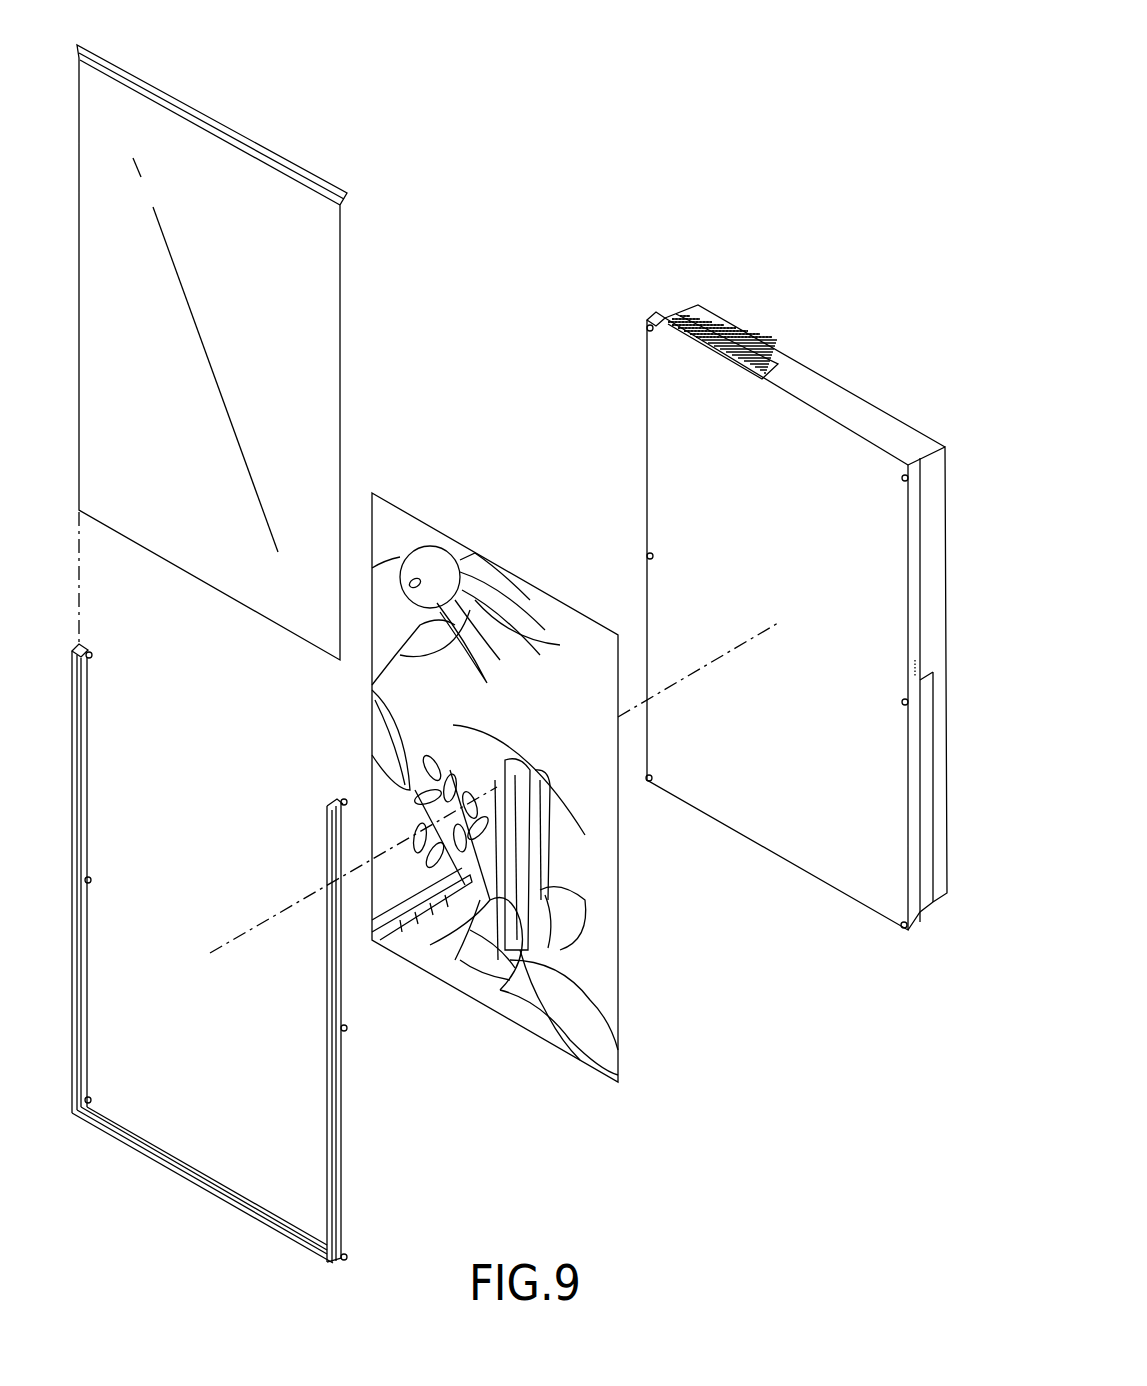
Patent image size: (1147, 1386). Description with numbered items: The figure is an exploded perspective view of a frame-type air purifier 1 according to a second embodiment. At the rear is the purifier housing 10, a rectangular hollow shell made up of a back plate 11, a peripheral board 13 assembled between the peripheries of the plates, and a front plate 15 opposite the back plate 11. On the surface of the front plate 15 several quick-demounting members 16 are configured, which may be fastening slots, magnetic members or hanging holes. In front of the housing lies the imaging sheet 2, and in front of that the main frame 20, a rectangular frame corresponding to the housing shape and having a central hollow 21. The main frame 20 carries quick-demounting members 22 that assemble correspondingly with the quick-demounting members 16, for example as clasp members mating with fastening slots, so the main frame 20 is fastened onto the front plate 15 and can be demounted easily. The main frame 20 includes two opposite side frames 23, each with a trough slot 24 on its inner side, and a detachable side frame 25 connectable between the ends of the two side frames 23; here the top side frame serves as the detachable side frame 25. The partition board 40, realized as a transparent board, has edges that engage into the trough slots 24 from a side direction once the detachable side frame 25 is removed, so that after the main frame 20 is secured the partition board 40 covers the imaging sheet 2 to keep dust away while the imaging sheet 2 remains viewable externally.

The frame-type air purifier 1 is at (961, 95).
The imaging sheet 2 is at (411, 525).
The purifier housing 10 is at (778, 602).
The back plate 11 is at (956, 470).
The peripheral board 13 is at (805, 385).
The front plate 15 is at (660, 432).
The quick-demounting member 16 is at (647, 330).
The main frame 20 is at (263, 956).
The central hollow 21 is at (305, 1140).
The quick-demounting member 22 is at (92, 655).
The side frame 23 is at (78, 739).
The trough slot 24 is at (83, 696).
The detachable side frame 25 is at (212, 352).
The partition board 40 is at (305, 217).